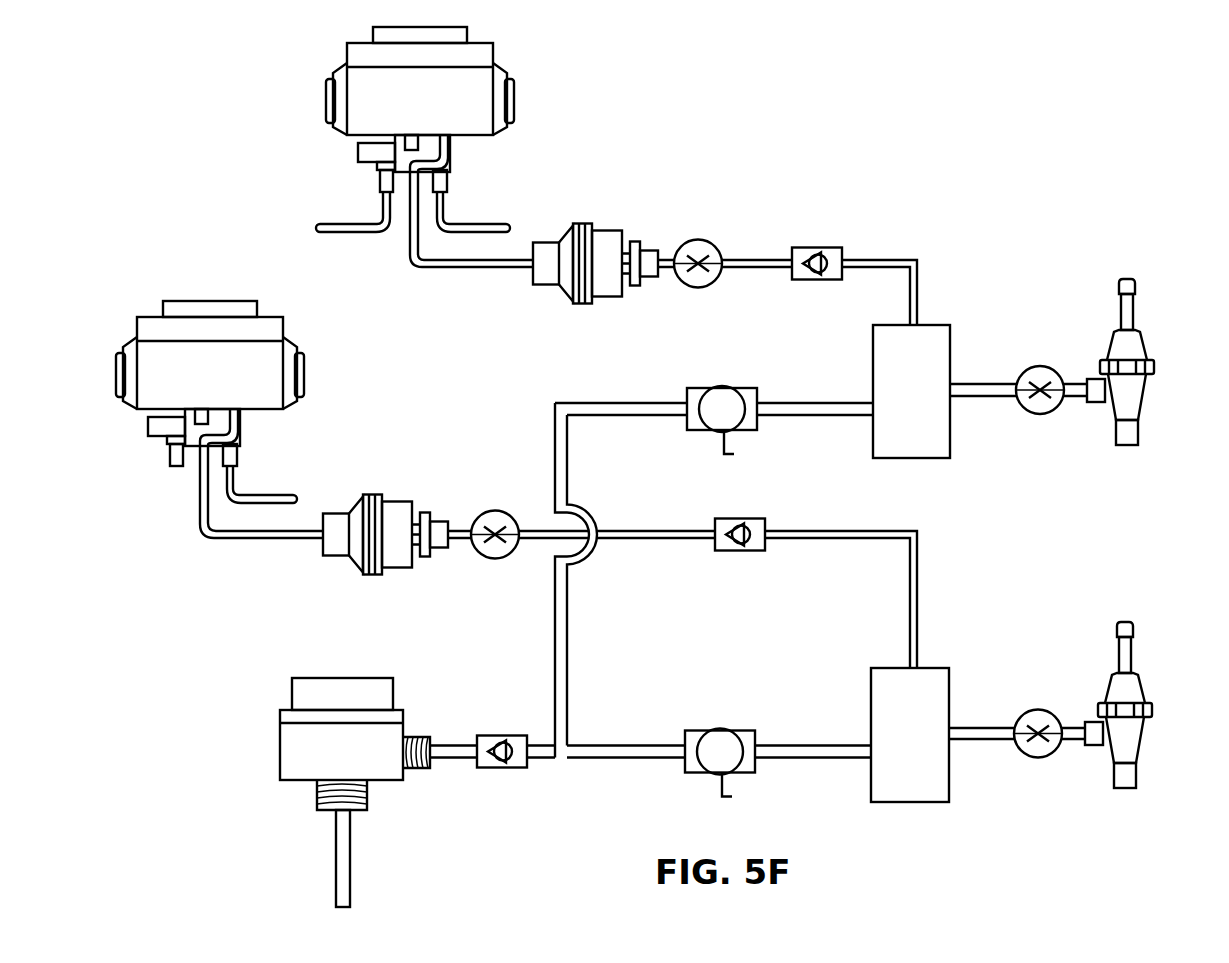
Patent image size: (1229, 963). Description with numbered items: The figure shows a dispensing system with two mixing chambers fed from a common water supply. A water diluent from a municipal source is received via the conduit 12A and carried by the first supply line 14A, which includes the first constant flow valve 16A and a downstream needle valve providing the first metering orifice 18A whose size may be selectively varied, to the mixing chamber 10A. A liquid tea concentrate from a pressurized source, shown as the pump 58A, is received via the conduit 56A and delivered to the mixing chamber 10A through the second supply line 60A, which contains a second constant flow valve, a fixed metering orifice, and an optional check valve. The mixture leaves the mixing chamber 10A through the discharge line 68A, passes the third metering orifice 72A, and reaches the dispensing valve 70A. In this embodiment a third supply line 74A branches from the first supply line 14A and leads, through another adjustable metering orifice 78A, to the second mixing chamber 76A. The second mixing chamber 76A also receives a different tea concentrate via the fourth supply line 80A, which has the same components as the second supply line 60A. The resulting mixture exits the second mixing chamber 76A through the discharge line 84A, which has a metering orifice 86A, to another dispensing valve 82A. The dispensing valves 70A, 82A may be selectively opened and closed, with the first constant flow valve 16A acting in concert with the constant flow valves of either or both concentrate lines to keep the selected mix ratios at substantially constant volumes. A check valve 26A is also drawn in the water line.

The fourth supply line 80A is at (741, 149).
The second mixing chamber 76A is at (873, 362).
The discharge line 84A is at (983, 383).
The metering orifice 86A is at (1042, 415).
The dispensing valve 82A is at (1146, 349).
The third supply line 74A is at (516, 437).
The adjustable metering orifice 78A is at (722, 386).
The pump 58A is at (304, 371).
The conduit 56A is at (272, 542).
The second supply line 60A is at (618, 491).
The first supply line 14A is at (639, 669).
The first metering orifice 18A is at (719, 728).
The mixing chamber 10A is at (871, 708).
The discharge line 68A is at (981, 726).
The third metering orifice 72A is at (1042, 757).
The dispensing valve 70A is at (1142, 689).
The first constant flow valve 16A is at (280, 748).
The check valve 26A is at (500, 768).
The conduit 12A is at (336, 858).